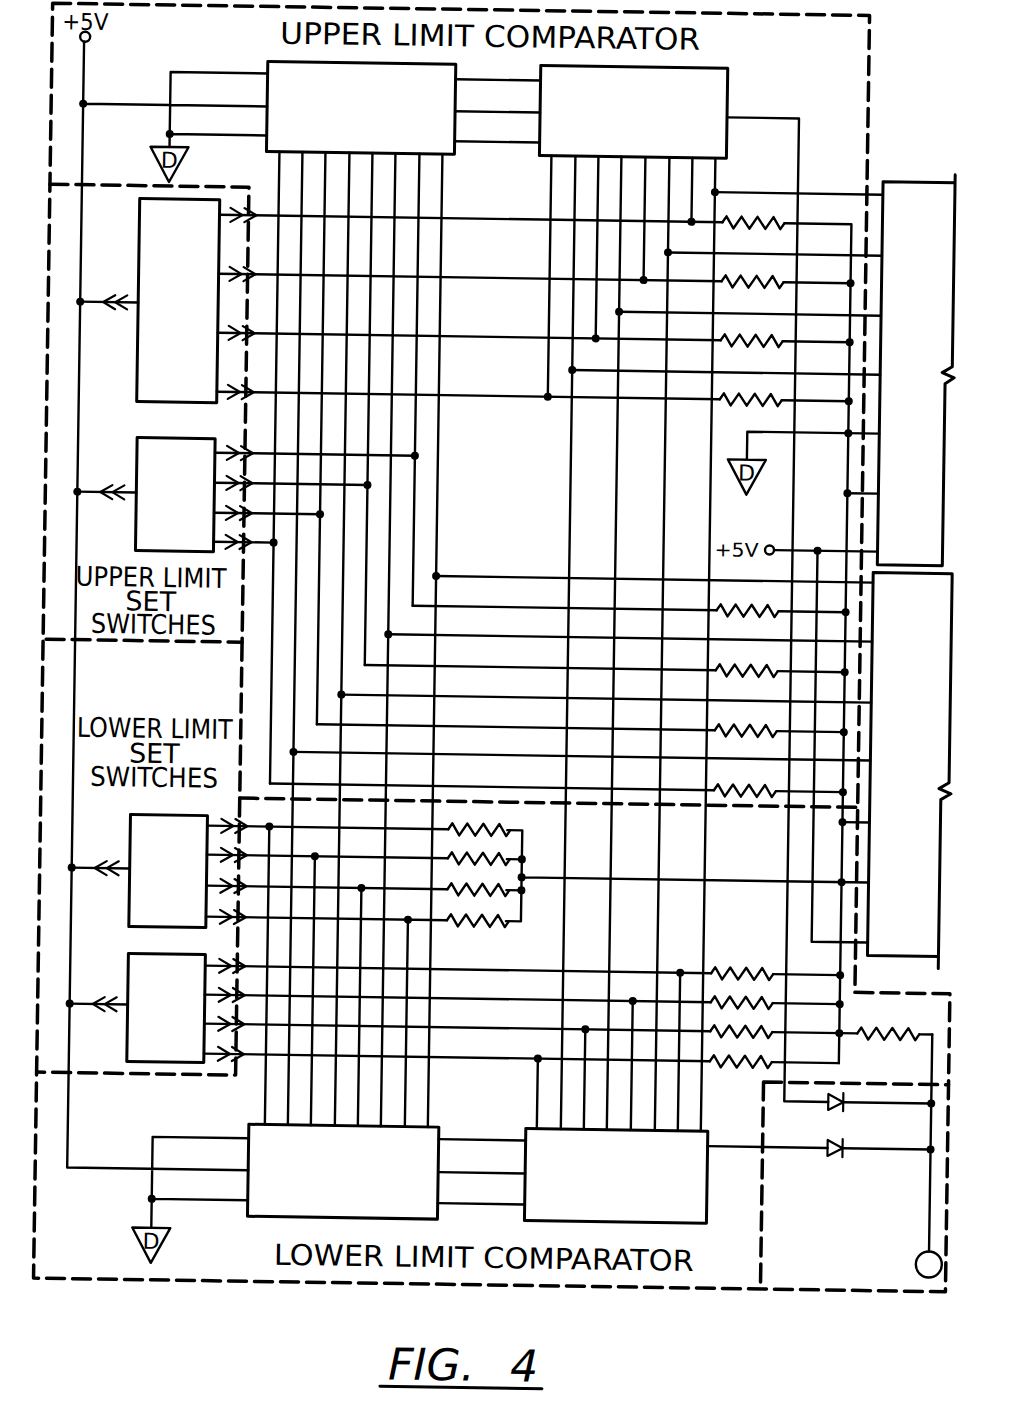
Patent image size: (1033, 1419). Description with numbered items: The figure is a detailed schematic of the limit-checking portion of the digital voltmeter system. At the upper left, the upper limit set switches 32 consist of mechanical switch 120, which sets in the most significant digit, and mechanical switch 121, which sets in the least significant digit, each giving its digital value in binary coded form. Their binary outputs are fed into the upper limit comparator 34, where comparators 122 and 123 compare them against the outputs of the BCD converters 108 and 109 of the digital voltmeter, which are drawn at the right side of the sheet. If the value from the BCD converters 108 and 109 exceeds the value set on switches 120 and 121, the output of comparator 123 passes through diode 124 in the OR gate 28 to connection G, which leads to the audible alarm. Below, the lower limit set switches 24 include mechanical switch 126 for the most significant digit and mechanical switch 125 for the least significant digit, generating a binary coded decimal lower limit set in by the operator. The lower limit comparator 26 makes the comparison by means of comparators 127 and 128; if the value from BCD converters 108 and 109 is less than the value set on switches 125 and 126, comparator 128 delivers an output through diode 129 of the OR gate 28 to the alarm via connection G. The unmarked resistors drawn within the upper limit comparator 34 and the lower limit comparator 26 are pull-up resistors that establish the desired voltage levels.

The lower limit set switches 24 is at (172, 702).
The lower limit comparator 26 is at (494, 1110).
The OR gate 28 is at (877, 1269).
The upper limit set switches 32 is at (113, 438).
The upper limit comparator 34 is at (514, 496).
The BCD converter 108 is at (928, 348).
The BCD converter 109 is at (933, 760).
The mechanical switch 120 is at (190, 322).
The mechanical switch 121 is at (180, 512).
The comparator 122 is at (380, 126).
The comparator 123 is at (654, 127).
The diode 124 is at (846, 1104).
The mechanical switch 125 is at (178, 886).
The mechanical switch 126 is at (182, 1024).
The comparator 127 is at (376, 1186).
The comparator 128 is at (648, 1184).
The diode 129 is at (847, 1155).